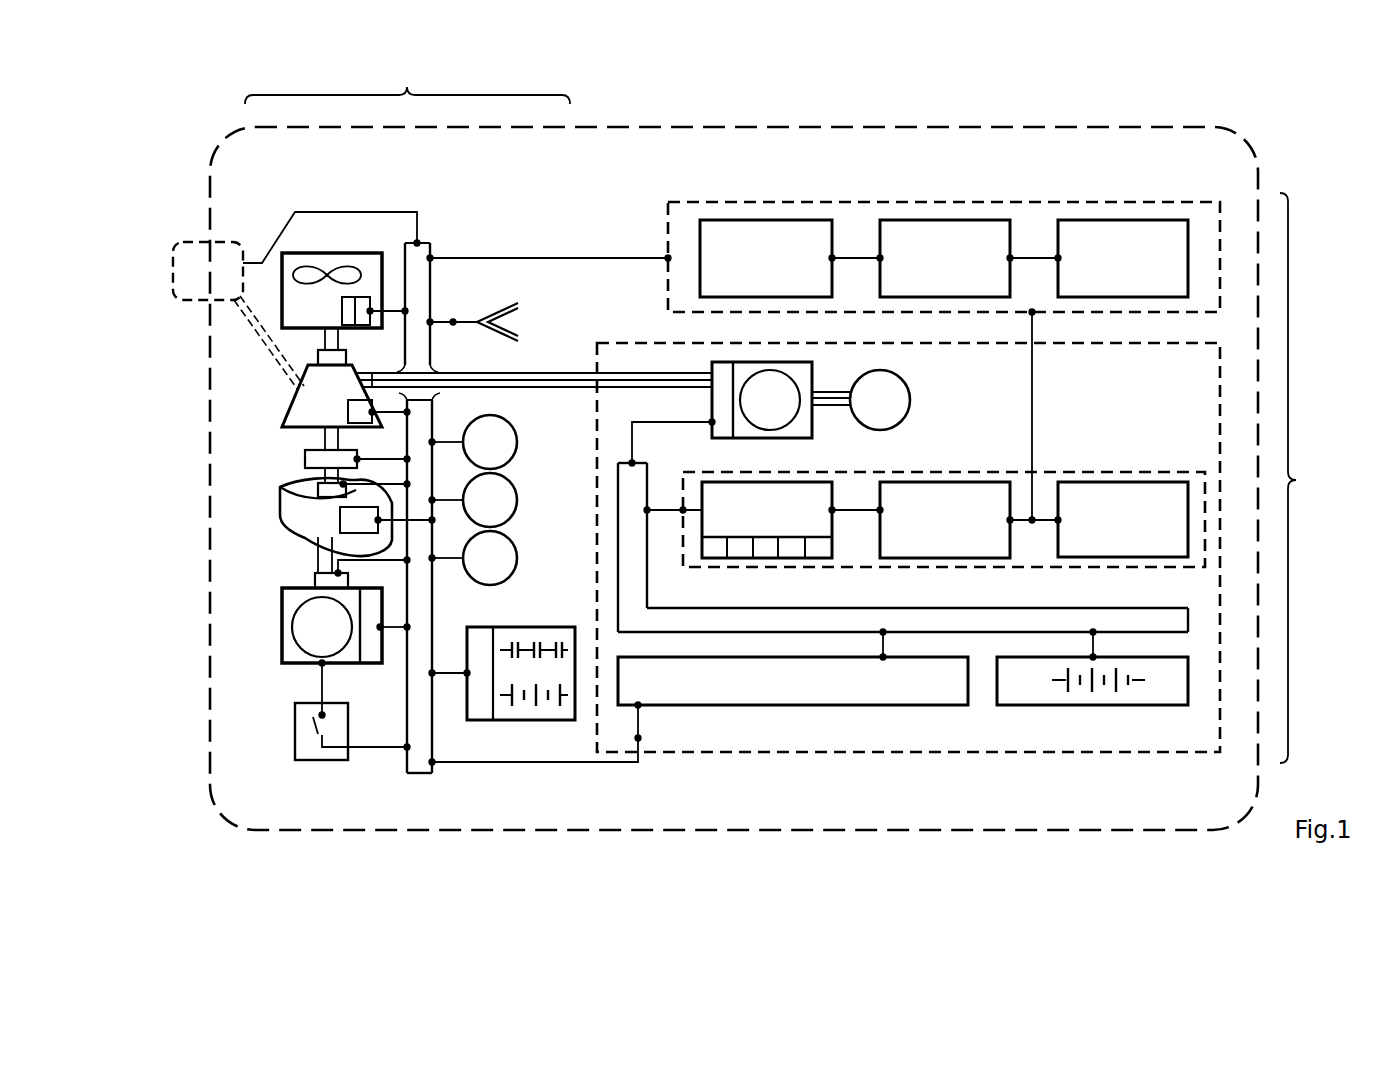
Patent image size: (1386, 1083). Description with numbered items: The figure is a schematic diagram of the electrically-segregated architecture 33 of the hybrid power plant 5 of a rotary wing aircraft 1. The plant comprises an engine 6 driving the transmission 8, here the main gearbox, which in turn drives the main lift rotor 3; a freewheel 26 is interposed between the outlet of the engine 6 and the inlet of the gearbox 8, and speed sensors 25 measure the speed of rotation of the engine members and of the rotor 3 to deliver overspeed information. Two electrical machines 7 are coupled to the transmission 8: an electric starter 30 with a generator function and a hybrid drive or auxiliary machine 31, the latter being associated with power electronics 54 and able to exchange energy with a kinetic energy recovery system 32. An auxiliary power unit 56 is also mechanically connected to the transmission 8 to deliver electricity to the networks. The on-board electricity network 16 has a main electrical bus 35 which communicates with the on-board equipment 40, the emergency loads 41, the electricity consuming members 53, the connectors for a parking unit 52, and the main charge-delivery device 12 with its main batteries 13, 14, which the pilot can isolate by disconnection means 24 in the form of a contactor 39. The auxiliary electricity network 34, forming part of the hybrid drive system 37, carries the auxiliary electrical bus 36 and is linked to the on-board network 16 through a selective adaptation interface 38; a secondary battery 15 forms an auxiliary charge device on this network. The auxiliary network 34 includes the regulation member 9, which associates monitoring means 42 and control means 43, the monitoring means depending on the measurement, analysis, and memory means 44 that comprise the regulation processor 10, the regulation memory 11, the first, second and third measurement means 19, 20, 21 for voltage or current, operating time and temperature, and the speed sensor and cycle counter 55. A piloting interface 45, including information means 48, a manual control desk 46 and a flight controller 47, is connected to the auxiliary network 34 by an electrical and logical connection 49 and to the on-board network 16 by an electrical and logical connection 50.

The rotary wing aircraft 1 is at (213, 813).
The main lift rotor 3 is at (309, 321).
The power plant 5 is at (238, 168).
The engine 6 is at (312, 530).
The electrical machine 7 is at (316, 640).
The transmission 8 is at (324, 403).
The regulation member 9 is at (937, 510).
The regulation processor 10 is at (714, 558).
The regulation memory 11 is at (740, 558).
The device for delivering electric charge 12 is at (751, 683).
The main battery 13 is at (541, 633).
The main battery 14 is at (558, 715).
The secondary battery 15 is at (1013, 693).
The on-board electricity network 16 is at (407, 87).
The first measurement means 19 is at (766, 558).
The second measurement means 20 is at (791, 558).
The third measurement means 21 is at (848, 572).
The disconnection means 24 is at (325, 765).
The speed sensor 25 is at (346, 357).
The freewheel 26 is at (305, 460).
The electric starter 30 is at (316, 640).
The hybrid drive machine 31 is at (698, 368).
The kinetic energy recovery system 32 is at (866, 413).
The electrical architecture 33 is at (1297, 480).
The auxiliary electricity network 34 is at (908, 579).
The main electrical bus 35 is at (425, 243).
The auxiliary electrical bus 36 is at (616, 490).
The hybrid drive system 37 is at (803, 755).
The selective adaptation interface 38 is at (781, 693).
The contactor 39 is at (348, 720).
The on-board equipment 40 is at (476, 513).
The emergency loads 41 is at (476, 571).
The monitoring means 42 is at (930, 533).
The control means 43 is at (1108, 531).
The measurement, analysis, and memory means 44 is at (781, 544).
The piloting interface 45 is at (912, 253).
The manual control desk 46 is at (930, 271).
The flight controller 47 is at (1108, 271).
The information means 48 is at (752, 271).
The electrical and logical connection 49 is at (1032, 395).
The electrical and logical connection 50 is at (555, 258).
The parking unit 52 is at (453, 322).
The electricity consuming members 53 is at (476, 455).
The power electronics 54 is at (373, 652).
The speed sensor 55 is at (818, 558).
The auxiliary power unit 56 is at (196, 284).